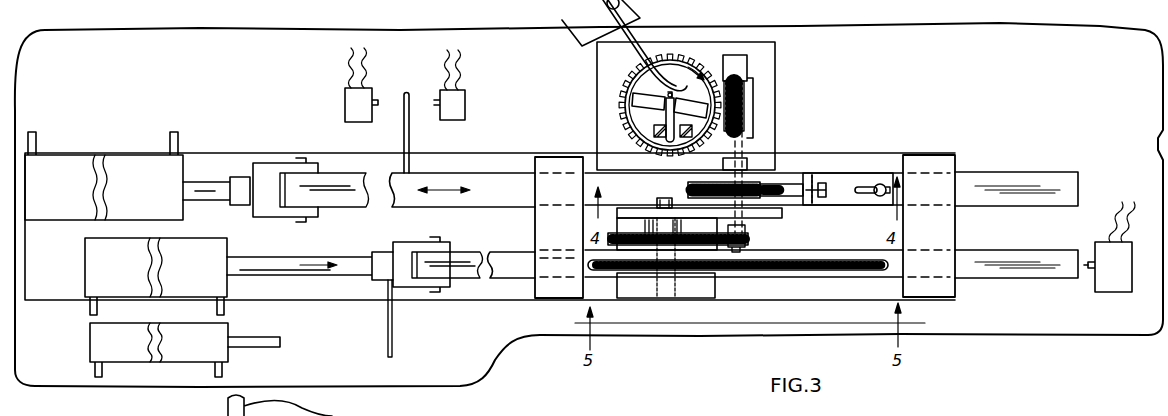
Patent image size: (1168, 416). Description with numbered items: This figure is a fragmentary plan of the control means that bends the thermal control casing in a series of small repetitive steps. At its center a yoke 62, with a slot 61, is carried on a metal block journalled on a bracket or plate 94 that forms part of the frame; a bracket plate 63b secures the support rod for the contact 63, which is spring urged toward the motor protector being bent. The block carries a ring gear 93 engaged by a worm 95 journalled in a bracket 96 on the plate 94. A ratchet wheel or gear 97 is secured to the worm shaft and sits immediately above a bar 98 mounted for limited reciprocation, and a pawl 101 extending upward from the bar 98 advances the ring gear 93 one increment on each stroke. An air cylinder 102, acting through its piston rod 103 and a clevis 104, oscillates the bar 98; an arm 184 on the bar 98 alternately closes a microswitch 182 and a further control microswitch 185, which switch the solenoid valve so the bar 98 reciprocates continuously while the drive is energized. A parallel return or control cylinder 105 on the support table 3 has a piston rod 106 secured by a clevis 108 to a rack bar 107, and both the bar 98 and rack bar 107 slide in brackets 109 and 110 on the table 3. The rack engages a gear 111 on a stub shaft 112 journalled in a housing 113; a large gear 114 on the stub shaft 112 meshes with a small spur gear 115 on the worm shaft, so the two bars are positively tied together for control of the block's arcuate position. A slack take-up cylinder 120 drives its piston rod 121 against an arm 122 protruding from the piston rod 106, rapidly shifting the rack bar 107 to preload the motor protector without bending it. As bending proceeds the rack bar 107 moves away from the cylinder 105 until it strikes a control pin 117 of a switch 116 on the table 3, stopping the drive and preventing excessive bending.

The support table 3 is at (871, 38).
The bracket plate 63b is at (569, 20).
The contact 63 is at (642, 32).
The bracket or plate 94 is at (602, 75).
The yoke 62 is at (637, 98).
The slot 61 is at (662, 110).
The ring gear 93 is at (623, 128).
The bracket 96 is at (766, 73).
The worm 95 is at (745, 110).
The ratchet wheel or gear 97 is at (781, 172).
The ratchet or pawl 101 is at (792, 188).
The bar 98 is at (480, 183).
The microswitch 182 is at (345, 101).
The control microswitch 185 is at (462, 110).
The arm 184 is at (402, 118).
The air cylinder 102 is at (136, 168).
The piston rod 103 is at (210, 188).
The clevis 104 is at (277, 168).
The return or control cylinder 105 is at (203, 254).
The piston rod 106 is at (292, 263).
The rack bar 107 is at (516, 272).
The clevis 108 is at (415, 287).
The bracket 109 is at (537, 218).
The bracket 110 is at (958, 239).
The gear 111 is at (683, 238).
The stub shaft 112 is at (662, 198).
The housing 113 is at (782, 213).
The gear 114 is at (648, 238).
The spur gear 115 is at (748, 239).
The switch 116 is at (1122, 291).
The control pin 117 is at (1090, 268).
The slack take-up cylinder 120 is at (133, 348).
The piston rod 121 is at (270, 343).
The arm 122 is at (392, 340).